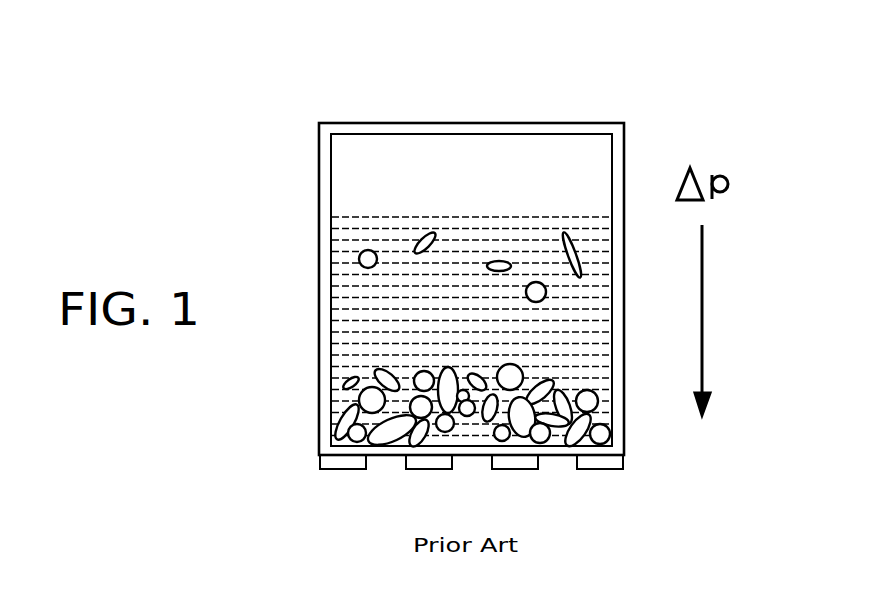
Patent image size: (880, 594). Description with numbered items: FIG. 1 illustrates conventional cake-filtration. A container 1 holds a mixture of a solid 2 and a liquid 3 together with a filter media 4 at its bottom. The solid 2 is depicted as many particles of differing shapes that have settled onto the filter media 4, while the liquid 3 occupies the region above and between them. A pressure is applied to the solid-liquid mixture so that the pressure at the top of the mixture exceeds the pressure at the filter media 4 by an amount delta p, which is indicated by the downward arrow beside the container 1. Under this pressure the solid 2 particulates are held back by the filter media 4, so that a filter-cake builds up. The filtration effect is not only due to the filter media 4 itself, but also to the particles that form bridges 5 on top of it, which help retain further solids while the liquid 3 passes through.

The container 1 is at (552, 123).
The solid 2 is at (372, 403).
The liquid 3 is at (372, 307).
The filter media 4 is at (522, 469).
The bridges 5 is at (563, 389).